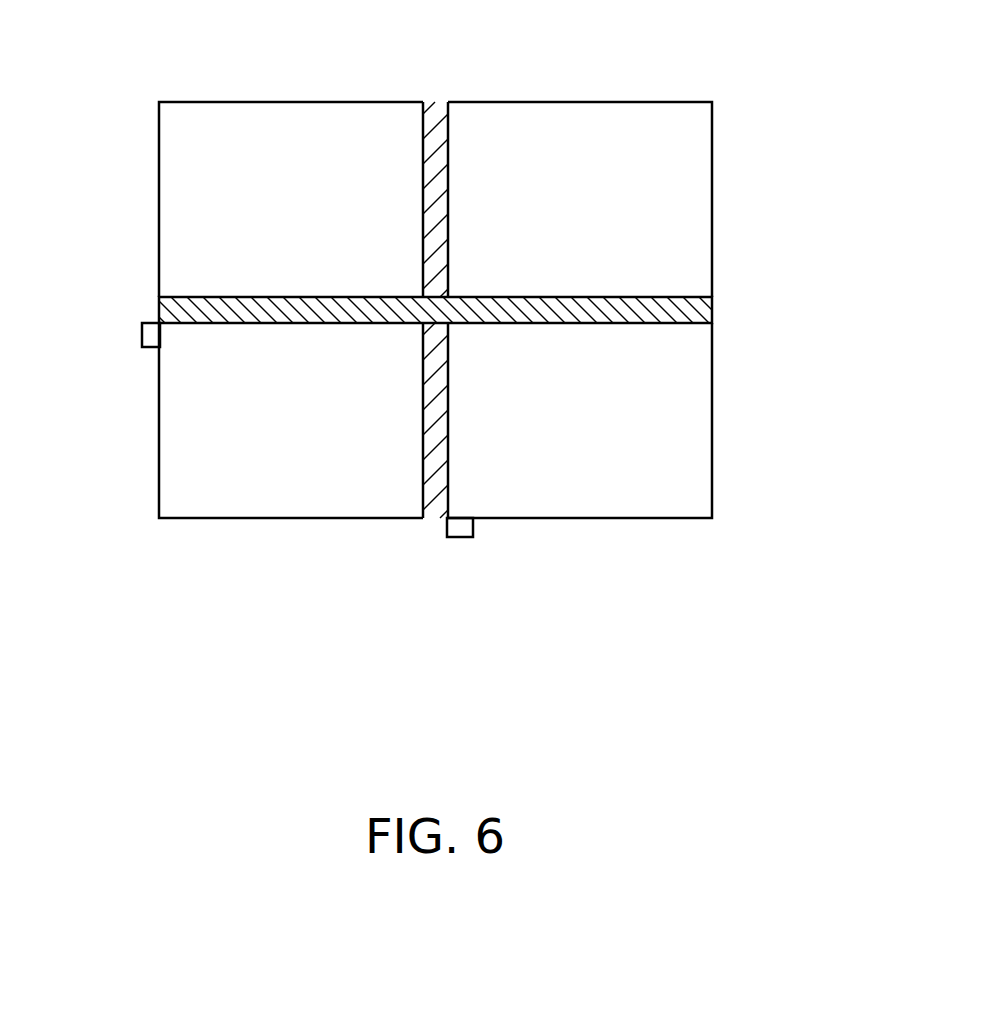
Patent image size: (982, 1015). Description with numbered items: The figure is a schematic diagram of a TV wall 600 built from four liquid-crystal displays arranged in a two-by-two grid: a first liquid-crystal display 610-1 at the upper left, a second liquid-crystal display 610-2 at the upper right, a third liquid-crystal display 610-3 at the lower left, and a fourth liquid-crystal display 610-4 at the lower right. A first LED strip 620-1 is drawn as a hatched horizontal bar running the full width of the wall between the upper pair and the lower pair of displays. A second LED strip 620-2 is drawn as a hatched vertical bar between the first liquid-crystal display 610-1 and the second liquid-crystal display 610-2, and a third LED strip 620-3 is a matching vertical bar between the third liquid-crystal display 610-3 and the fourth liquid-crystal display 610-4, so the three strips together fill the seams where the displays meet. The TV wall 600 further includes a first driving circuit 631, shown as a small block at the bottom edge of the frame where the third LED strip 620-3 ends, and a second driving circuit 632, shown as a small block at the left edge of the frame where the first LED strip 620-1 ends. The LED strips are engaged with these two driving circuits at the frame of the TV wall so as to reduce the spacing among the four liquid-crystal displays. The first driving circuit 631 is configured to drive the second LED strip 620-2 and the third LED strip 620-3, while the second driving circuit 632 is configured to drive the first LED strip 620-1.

The TV wall 600 is at (436, 348).
The first liquid-crystal display 610-1 is at (333, 218).
The second liquid-crystal display 610-2 is at (620, 217).
The third liquid-crystal display 610-3 is at (332, 436).
The fourth liquid-crystal display 610-4 is at (620, 436).
The first LED strip 620-1 is at (693, 308).
The second LED strip 620-2 is at (435, 112).
The third LED strip 620-3 is at (435, 502).
The first driving circuit 631 is at (475, 527).
The second driving circuit 632 is at (142, 333).